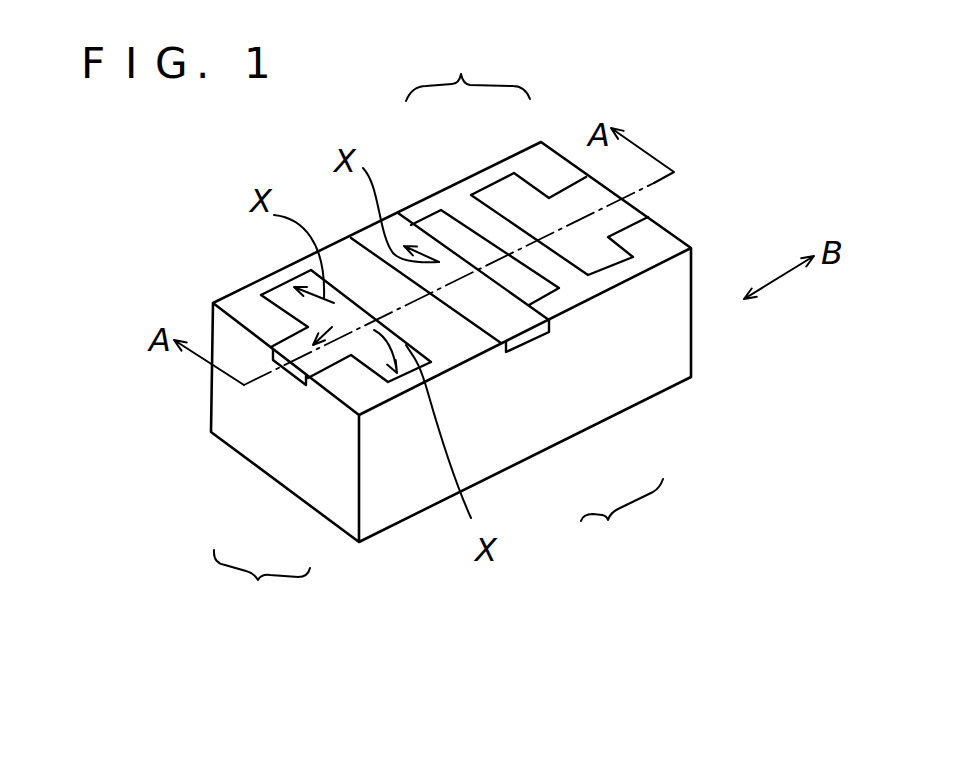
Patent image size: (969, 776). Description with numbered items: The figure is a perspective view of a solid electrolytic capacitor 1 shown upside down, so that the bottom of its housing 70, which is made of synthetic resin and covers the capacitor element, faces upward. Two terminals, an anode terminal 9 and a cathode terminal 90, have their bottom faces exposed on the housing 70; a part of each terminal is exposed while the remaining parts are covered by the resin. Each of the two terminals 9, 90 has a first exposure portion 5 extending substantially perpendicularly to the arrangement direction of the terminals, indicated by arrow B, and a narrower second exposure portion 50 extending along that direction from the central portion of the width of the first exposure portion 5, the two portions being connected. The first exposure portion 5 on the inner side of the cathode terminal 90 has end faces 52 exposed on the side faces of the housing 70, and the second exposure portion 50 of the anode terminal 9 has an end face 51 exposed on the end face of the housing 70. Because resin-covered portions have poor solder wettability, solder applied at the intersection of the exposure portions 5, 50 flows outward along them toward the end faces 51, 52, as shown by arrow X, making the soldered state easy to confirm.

The solid electrolytic capacitor 1 is at (723, 358).
The first exposure portion 5 is at (493, 195).
The anode terminal 9 is at (262, 588).
The second exposure portion 50 is at (570, 196).
The end face 51 is at (291, 378).
The end faces 52 is at (533, 335).
The housing 70 is at (648, 392).
The cathode terminal 90 is at (534, 311).